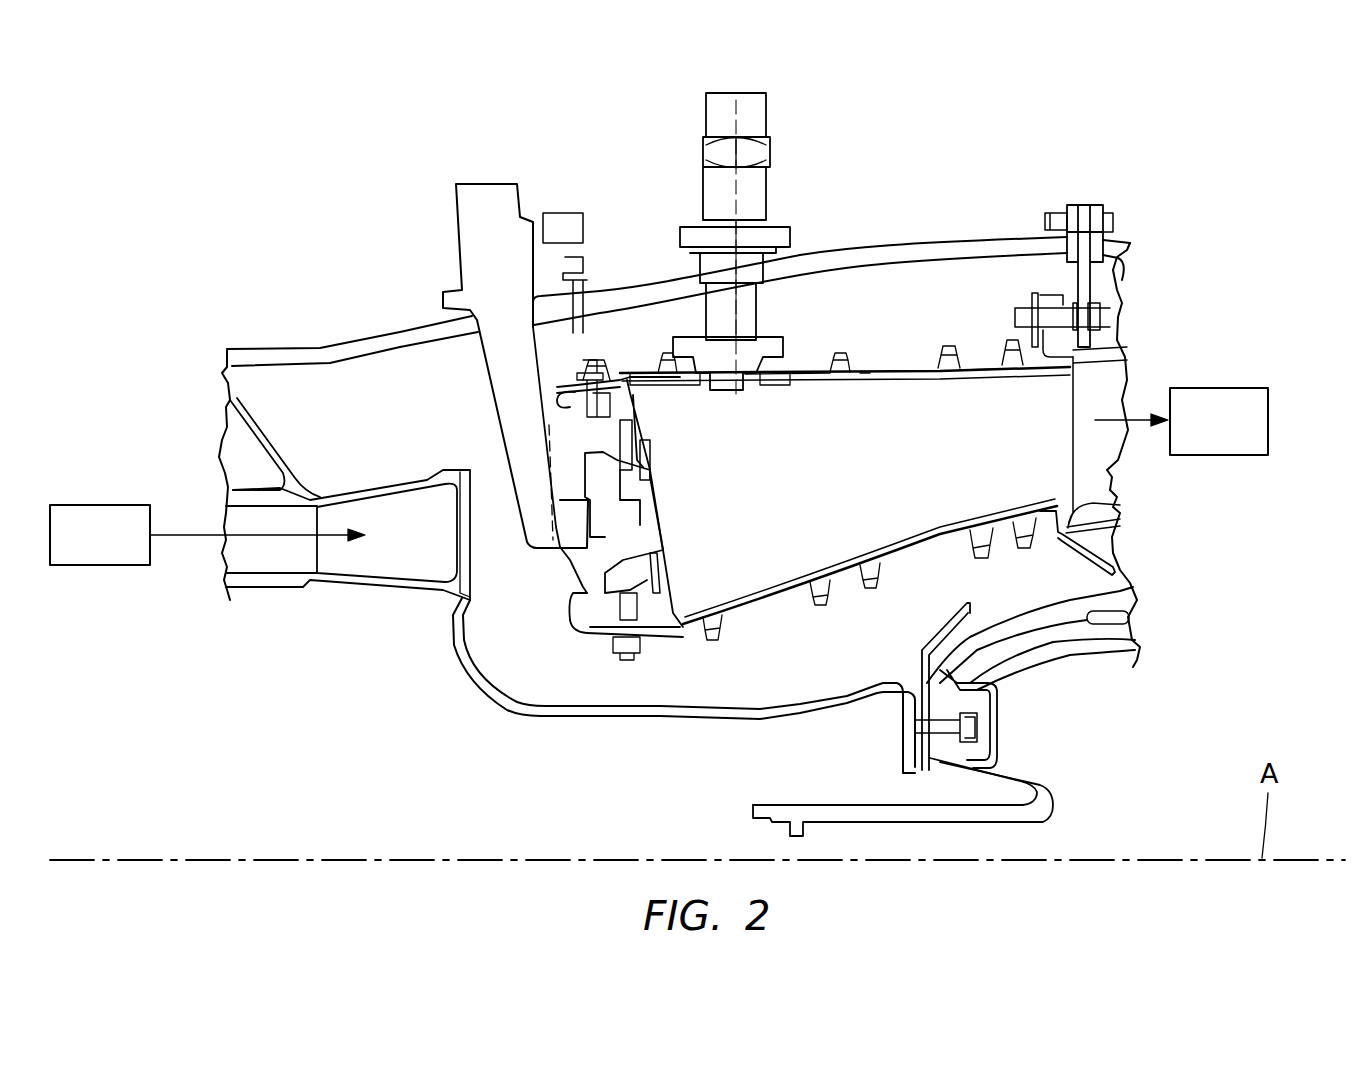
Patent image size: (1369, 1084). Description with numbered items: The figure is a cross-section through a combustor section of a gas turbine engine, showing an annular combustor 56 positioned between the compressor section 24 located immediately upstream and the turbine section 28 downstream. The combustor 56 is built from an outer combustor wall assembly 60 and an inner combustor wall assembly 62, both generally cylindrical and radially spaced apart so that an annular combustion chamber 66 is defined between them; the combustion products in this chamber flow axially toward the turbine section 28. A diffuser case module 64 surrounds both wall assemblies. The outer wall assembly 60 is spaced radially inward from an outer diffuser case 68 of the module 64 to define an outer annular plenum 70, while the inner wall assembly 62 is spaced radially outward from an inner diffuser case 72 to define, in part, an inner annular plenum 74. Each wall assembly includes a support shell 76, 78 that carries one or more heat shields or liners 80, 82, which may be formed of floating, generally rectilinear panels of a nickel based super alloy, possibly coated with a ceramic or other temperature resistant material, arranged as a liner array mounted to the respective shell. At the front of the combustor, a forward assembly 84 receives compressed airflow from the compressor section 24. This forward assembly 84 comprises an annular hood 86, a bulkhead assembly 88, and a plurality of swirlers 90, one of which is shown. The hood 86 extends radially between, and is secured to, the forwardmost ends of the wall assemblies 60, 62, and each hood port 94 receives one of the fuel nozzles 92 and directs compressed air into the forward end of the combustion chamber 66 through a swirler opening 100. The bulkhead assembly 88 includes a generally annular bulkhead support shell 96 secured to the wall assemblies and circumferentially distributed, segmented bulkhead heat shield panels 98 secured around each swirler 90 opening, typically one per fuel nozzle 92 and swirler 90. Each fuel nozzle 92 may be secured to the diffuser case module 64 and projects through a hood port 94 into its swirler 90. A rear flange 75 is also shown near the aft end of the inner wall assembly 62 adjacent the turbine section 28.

The compressor section 24 is at (115, 550).
The turbine section 28 is at (1234, 435).
The annular combustor 56 is at (997, 145).
The outer combustor wall assembly 60 is at (826, 374).
The inner combustor wall assembly 62 is at (870, 571).
The diffuser case module 64 is at (683, 409).
The annular combustion chamber 66 is at (826, 464).
The outer diffuser case 68 is at (822, 247).
The outer annular plenum 70 is at (836, 311).
The inner diffuser case 72 is at (753, 717).
The inner annular plenum 74 is at (816, 685).
The aft flange 75 is at (1057, 548).
The support shell 76 is at (870, 370).
The support shell 78 is at (945, 550).
The liner 80 is at (767, 385).
The liner 82 is at (768, 585).
The forward assembly 84 is at (568, 652).
The annular hood 86 is at (578, 607).
The bulkhead assembly 88 is at (636, 379).
The swirler 90 is at (655, 545).
The fuel nozzle 92 is at (518, 318).
The hood port 94 is at (570, 587).
The bulkhead support shell 96 is at (582, 627).
The bulkhead heat shield panel 98 is at (660, 570).
The swirler opening 100 is at (660, 500).